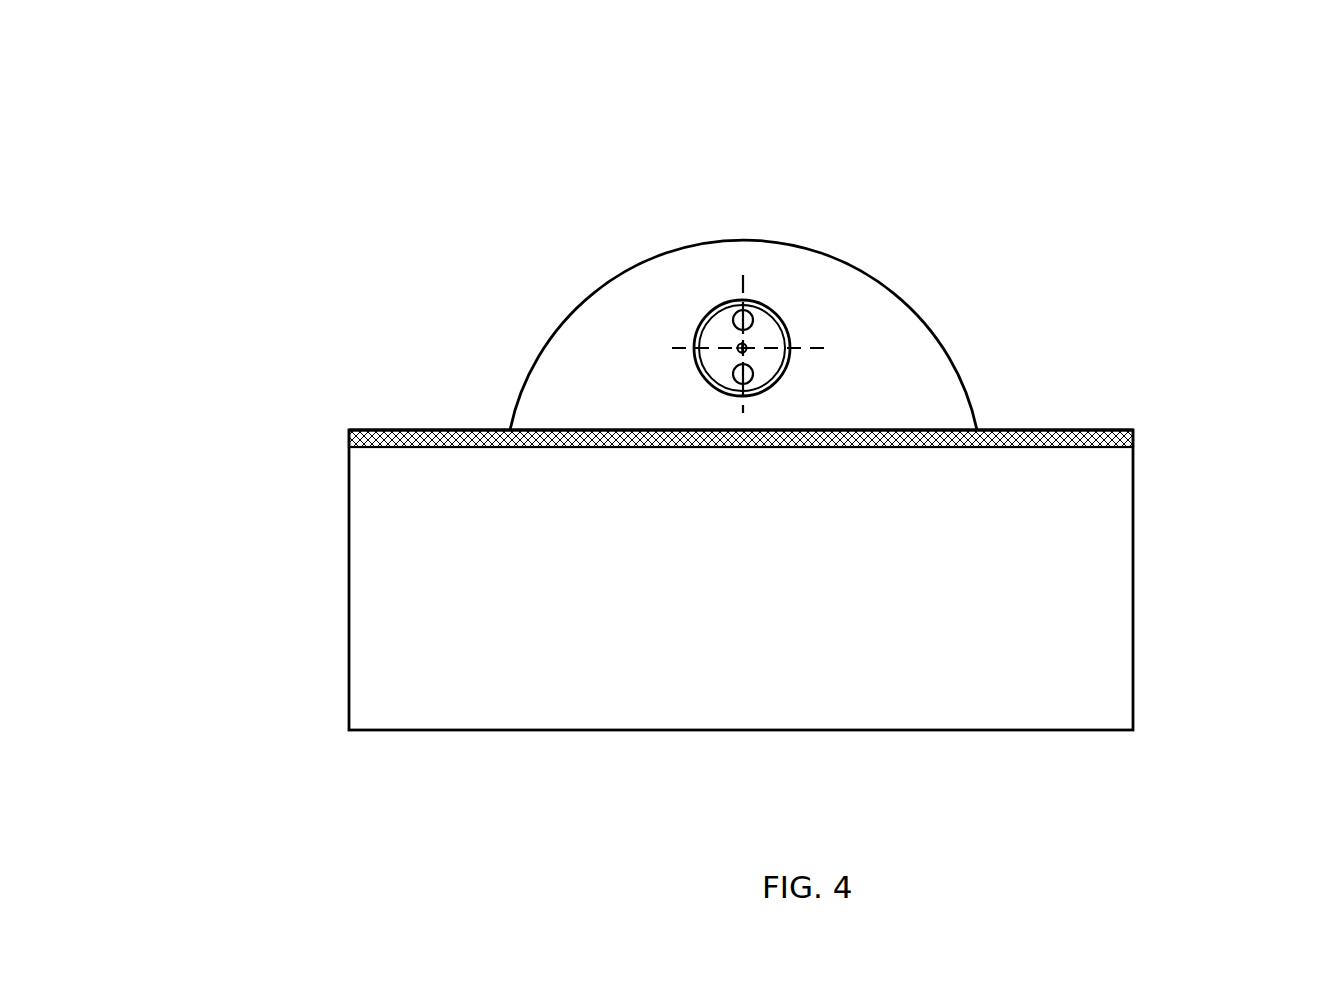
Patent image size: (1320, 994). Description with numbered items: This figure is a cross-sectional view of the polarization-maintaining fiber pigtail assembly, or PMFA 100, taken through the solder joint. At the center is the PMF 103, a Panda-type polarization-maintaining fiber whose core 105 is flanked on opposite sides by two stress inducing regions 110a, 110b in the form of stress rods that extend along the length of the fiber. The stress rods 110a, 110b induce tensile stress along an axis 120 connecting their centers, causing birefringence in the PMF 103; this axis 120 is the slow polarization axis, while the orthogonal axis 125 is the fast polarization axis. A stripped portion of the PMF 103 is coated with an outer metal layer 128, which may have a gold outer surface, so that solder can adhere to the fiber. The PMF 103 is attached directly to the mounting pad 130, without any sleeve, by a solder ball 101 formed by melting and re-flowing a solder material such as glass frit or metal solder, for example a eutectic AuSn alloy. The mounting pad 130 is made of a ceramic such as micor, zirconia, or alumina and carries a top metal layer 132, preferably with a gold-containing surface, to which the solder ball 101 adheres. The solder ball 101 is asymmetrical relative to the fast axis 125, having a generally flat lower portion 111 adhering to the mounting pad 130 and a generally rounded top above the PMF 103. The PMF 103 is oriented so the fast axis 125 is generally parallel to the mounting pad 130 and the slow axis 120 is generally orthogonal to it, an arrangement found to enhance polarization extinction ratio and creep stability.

The PM optical fiber pigtail assembly 100 is at (1077, 133).
The solder ball 101 is at (563, 320).
The PMF 103 is at (788, 302).
The core 105 is at (737, 347).
The stress inducing region 110a is at (750, 311).
The stress inducing region 110b is at (753, 379).
The lower portion 111 is at (615, 432).
The axis 120 is at (740, 288).
The axis 125 is at (668, 348).
The outer metal layer 128 is at (790, 325).
The mounting pad 130 is at (1052, 431).
The top metal layer 132 is at (1133, 443).